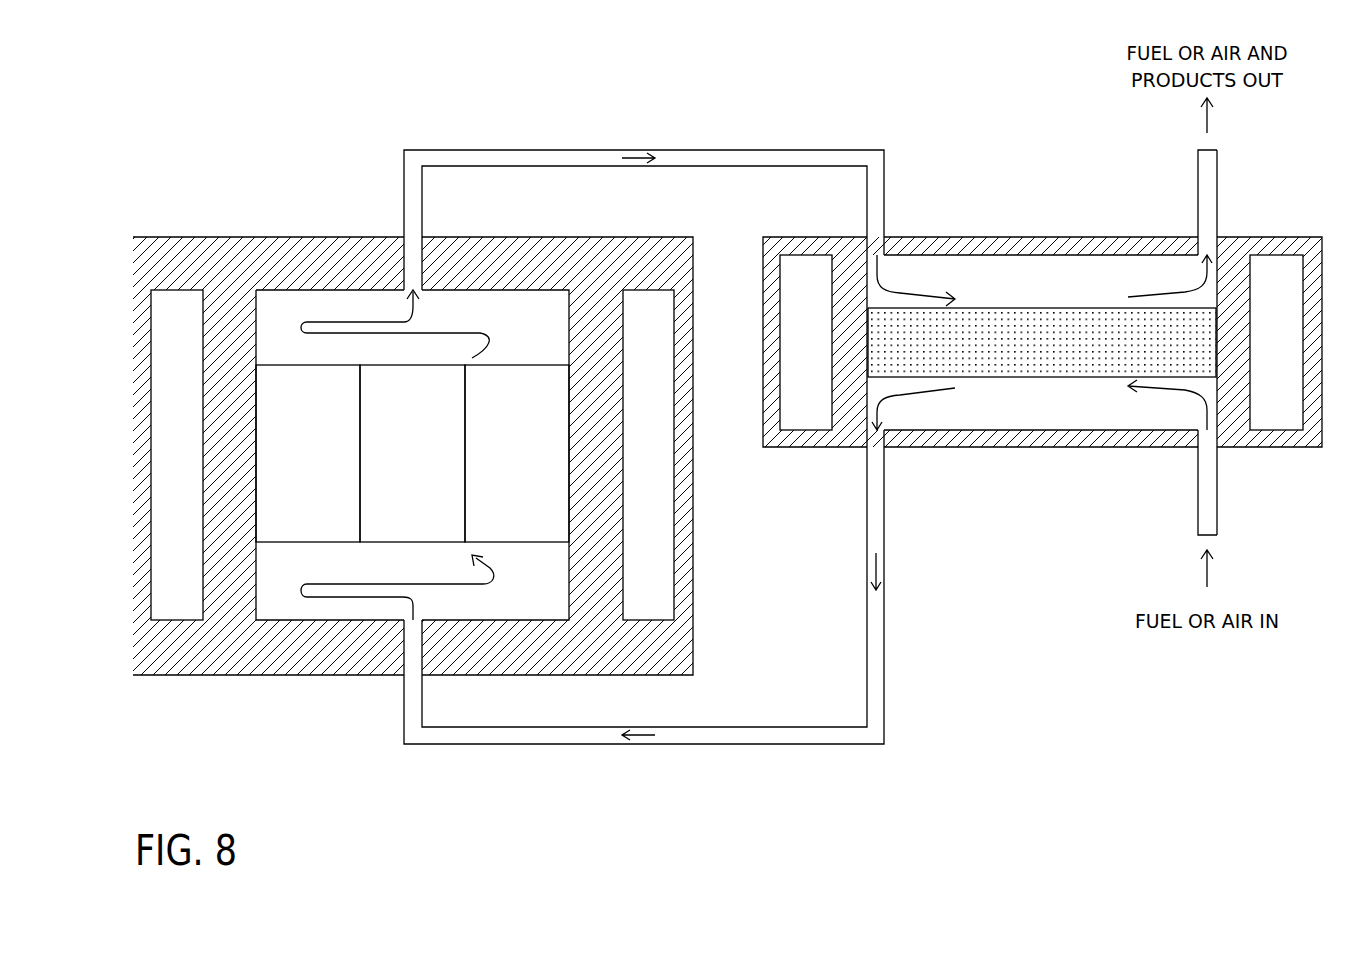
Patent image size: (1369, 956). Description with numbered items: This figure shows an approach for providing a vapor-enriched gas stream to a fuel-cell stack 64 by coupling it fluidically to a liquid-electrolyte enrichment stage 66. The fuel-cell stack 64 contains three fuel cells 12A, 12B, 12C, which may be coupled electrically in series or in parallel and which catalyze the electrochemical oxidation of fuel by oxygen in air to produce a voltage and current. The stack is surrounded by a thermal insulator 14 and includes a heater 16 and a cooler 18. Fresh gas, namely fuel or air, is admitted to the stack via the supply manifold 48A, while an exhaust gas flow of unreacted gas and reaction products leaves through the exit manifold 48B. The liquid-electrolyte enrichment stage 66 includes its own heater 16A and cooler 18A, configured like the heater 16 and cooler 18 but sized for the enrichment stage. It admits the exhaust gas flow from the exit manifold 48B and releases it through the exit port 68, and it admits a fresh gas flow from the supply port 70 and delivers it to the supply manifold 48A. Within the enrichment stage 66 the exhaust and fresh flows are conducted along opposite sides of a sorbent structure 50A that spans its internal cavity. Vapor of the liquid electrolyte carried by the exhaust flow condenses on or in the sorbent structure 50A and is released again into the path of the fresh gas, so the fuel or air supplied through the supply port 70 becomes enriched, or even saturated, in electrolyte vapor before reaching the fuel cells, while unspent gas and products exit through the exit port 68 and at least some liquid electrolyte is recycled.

The thermal insulator 14 is at (195, 676).
The heater 16 is at (165, 467).
The cooler 18 is at (636, 467).
The fuel cell 12A is at (289, 467).
The fuel cell 12B is at (394, 467).
The fuel cell 12C is at (499, 467).
The supply manifold 48A is at (304, 572).
The exit manifold 48B is at (304, 360).
The fuel-cell stack 64 is at (273, 167).
The liquid-electrolyte enrichment stage 66 is at (1045, 167).
The heater 16A is at (787, 352).
The cooler 18A is at (1258, 352).
The sorbent structure 50A is at (1024, 352).
The exit port 68 is at (1218, 200).
The supply port 70 is at (1218, 480).